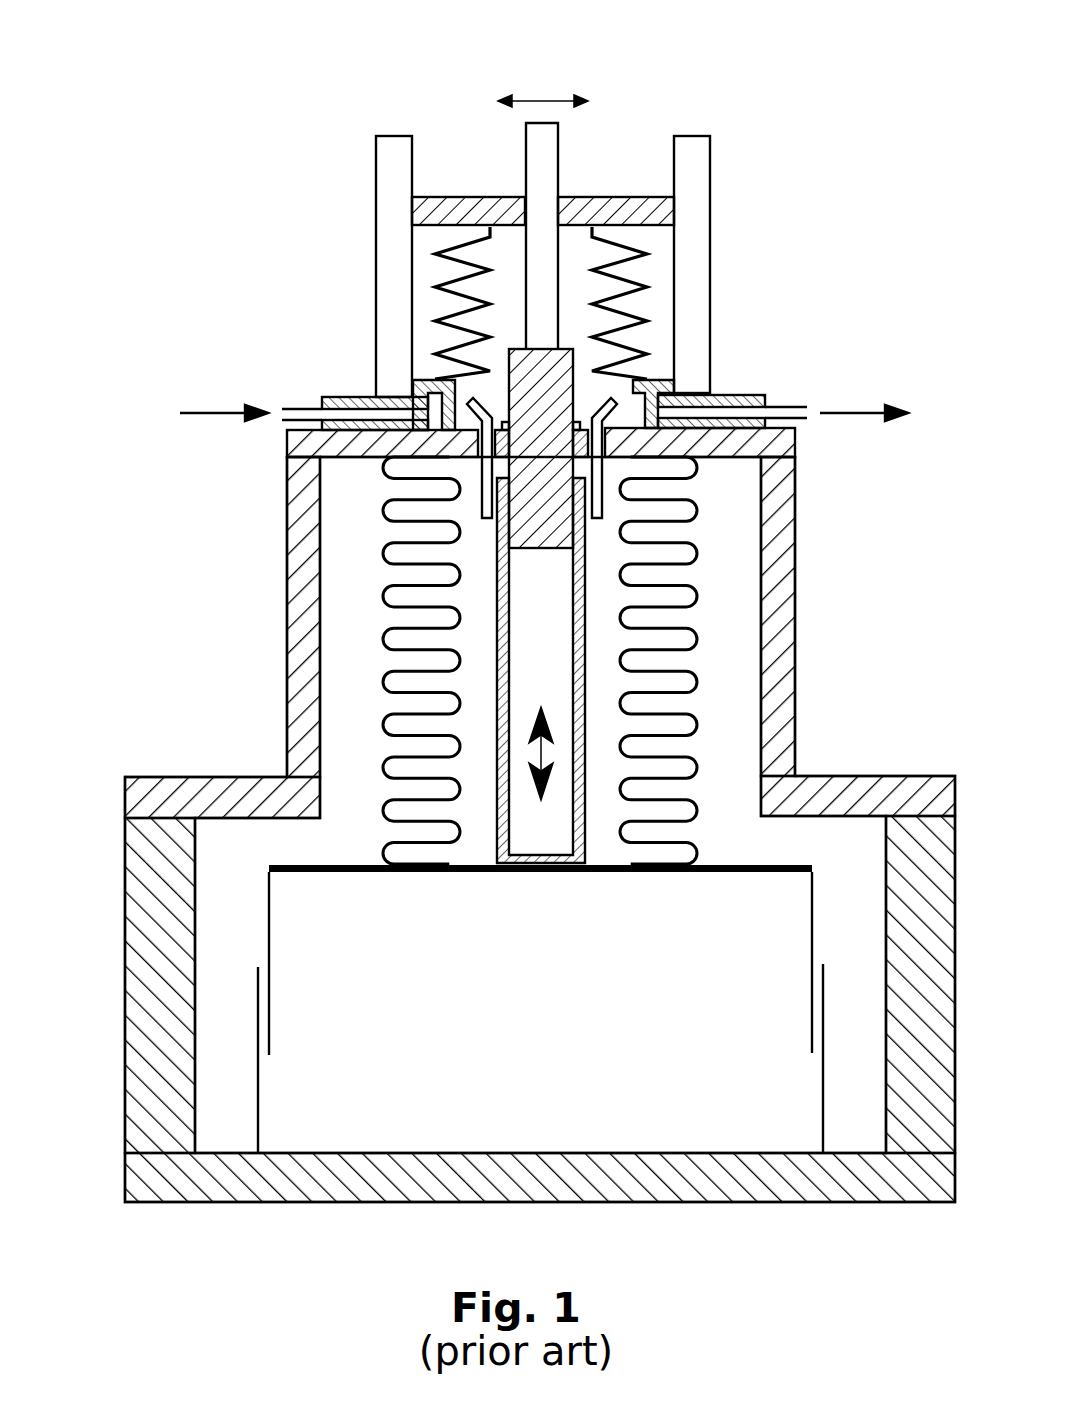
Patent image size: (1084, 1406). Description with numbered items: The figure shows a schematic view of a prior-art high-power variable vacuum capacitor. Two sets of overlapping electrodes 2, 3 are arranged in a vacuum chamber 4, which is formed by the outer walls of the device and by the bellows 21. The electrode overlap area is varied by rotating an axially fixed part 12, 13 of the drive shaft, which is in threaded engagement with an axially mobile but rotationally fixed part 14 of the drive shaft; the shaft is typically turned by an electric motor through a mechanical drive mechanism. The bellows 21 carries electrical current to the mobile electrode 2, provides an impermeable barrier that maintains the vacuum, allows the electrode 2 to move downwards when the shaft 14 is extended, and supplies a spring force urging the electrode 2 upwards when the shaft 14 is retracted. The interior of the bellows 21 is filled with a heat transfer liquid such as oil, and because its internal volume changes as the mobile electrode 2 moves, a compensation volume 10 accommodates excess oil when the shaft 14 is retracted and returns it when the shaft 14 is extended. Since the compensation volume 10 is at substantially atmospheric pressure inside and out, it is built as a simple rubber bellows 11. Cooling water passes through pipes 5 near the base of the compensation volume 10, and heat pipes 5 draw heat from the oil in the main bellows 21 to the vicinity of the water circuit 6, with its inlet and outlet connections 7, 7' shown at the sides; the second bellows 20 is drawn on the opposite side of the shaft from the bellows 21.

The mobile electrode 2 is at (308, 865).
The electrode 3 is at (258, 1107).
The vacuum chamber 4 is at (357, 609).
The pipes 5 is at (488, 486).
The water circuit 6 is at (412, 380).
The inlet pipe 7 is at (304, 380).
The outlet pipe 7' is at (783, 363).
The compensation volume 10 is at (575, 253).
The rubber bellows 11 is at (645, 282).
The axially fixed part of the drive shaft 12 is at (532, 180).
The axially fixed part of the drive shaft 13 is at (565, 363).
The axially mobile part of the drive shaft 14 is at (585, 632).
The left bellows 20 is at (600, 727).
The bellows 21 is at (700, 545).